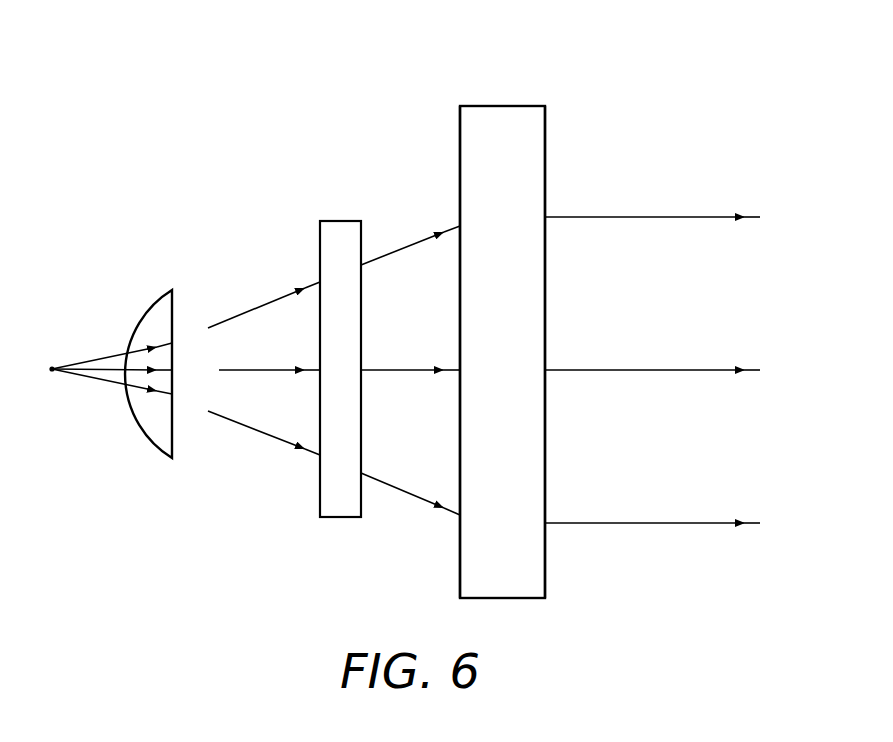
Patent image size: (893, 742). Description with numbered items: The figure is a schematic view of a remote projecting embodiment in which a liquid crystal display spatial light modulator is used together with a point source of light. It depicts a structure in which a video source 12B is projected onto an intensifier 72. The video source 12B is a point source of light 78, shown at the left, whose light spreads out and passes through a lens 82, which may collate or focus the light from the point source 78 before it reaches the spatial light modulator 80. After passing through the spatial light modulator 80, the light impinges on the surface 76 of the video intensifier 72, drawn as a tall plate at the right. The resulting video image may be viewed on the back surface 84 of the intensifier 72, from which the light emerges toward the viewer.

The video source 12B is at (93, 303).
The point source of light 78 is at (52, 372).
The lens 82 is at (180, 312).
The spacial light modulator 80 is at (343, 507).
The intensifier 72 is at (553, 145).
The surface 76 is at (475, 172).
The back surface 84 is at (545, 262).